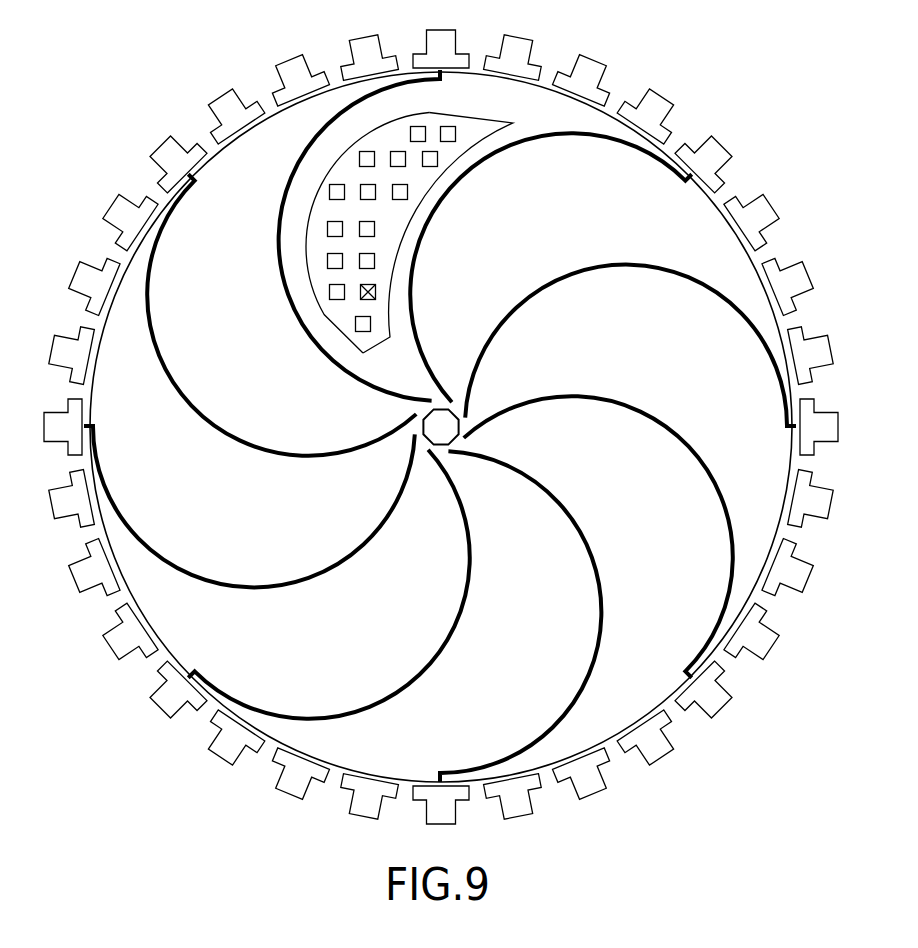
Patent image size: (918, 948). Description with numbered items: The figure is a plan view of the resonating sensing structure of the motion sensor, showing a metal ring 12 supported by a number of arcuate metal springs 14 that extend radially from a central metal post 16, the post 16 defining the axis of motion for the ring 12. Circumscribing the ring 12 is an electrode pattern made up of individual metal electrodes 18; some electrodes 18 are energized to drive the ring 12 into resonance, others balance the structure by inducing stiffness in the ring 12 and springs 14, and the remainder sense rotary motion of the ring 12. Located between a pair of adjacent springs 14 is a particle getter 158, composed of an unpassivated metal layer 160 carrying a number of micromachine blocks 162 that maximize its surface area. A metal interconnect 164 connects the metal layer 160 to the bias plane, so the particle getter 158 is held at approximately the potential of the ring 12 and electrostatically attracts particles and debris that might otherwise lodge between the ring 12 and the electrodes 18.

The metal ring 12 is at (363, 771).
The arcuate metal springs 14 is at (721, 604).
The metal post 16 is at (459, 436).
The metal electrodes 18 is at (82, 260).
The particle getter 158 is at (283, 203).
The unpassivated metal layer 160 is at (470, 137).
The micromachine blocks 162 is at (328, 233).
The metal interconnect 164 is at (378, 291).